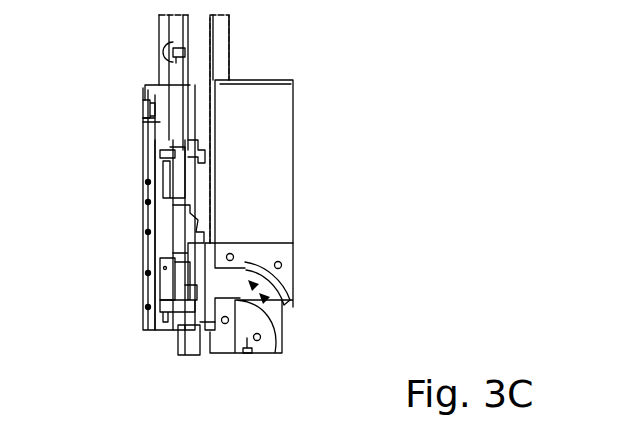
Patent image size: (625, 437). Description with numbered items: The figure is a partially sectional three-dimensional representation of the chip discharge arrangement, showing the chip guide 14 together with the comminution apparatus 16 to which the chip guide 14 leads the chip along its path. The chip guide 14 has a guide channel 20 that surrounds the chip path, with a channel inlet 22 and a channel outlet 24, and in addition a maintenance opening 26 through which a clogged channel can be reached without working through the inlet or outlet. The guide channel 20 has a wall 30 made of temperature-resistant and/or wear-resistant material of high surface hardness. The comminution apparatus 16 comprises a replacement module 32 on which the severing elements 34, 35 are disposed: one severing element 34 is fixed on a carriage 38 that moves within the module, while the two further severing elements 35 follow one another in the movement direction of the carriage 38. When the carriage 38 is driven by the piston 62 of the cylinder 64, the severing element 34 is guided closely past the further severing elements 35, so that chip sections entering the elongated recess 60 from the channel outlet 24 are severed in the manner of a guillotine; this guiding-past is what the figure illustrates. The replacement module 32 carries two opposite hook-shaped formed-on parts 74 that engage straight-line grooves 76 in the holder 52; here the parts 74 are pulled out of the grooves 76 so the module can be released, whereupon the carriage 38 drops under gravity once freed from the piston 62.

The chip guide 14 is at (324, 328).
The comminution apparatus 16 is at (106, 214).
The guide channel 20 is at (290, 295).
The channel inlet 22 is at (290, 336).
The channel outlet 24 is at (203, 277).
The maintenance opening 26 is at (283, 282).
The wall 30 is at (273, 256).
The replacement module 32 is at (134, 239).
The severing element 34 is at (165, 332).
The further severing element 35 is at (198, 233).
The carriage 38 is at (142, 199).
The holder 52 is at (285, 128).
The elongated recess 60 is at (166, 262).
The piston 62 is at (198, 63).
The cylinder 64 is at (220, 38).
The hook-shaped formed-on part 74 is at (143, 103).
The groove 76 is at (143, 116).